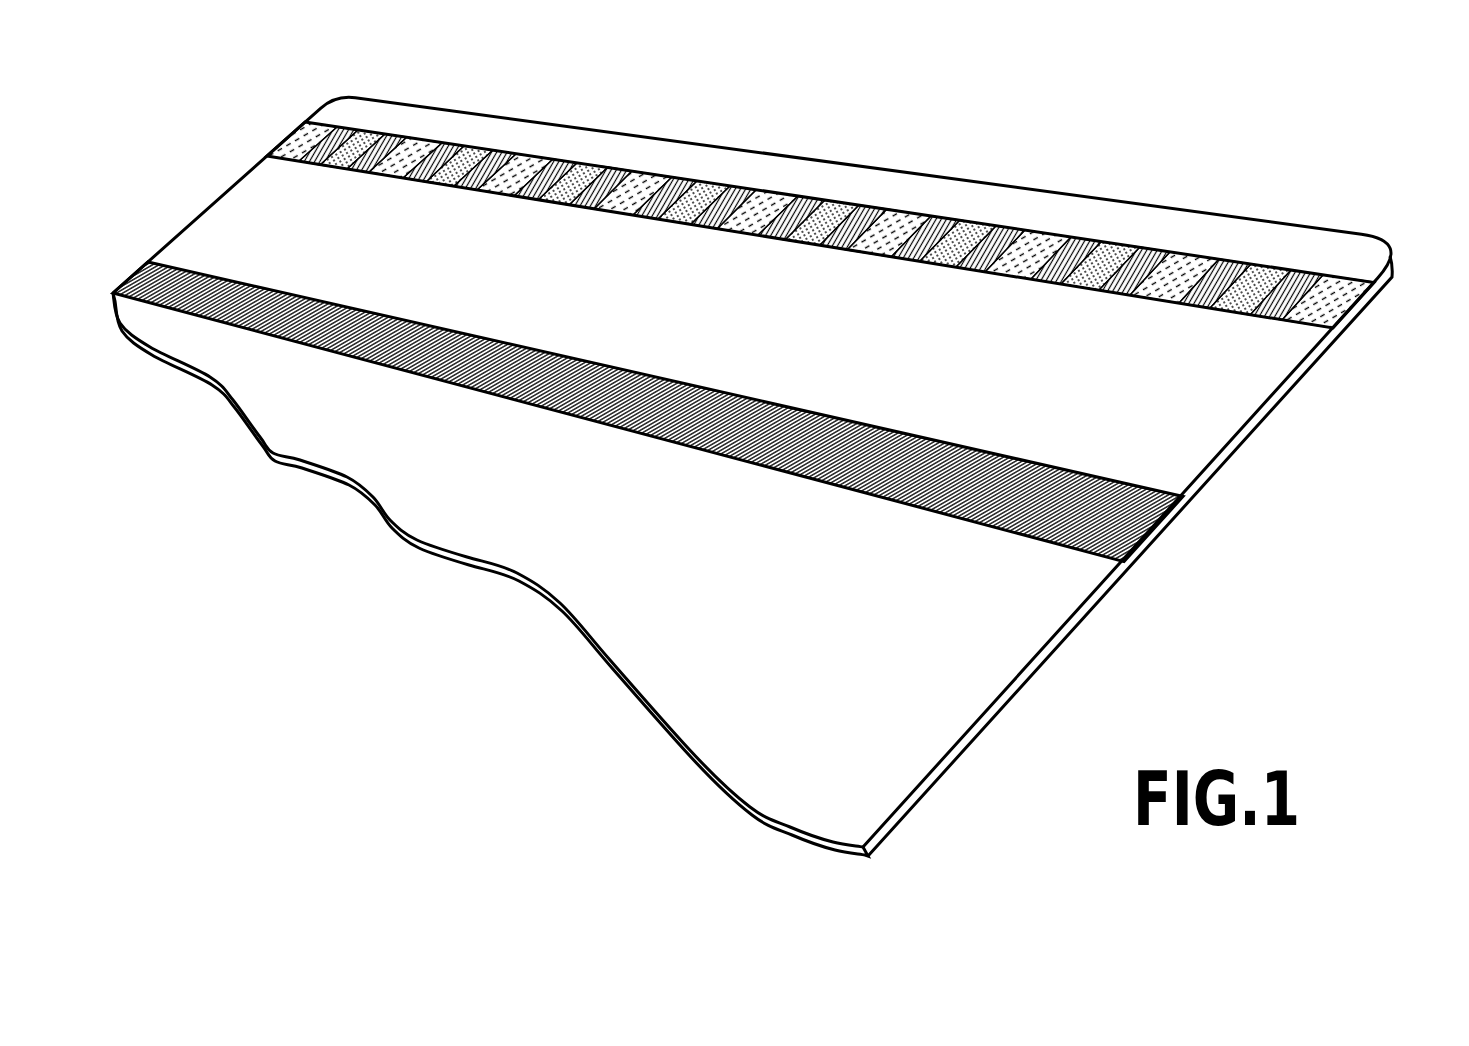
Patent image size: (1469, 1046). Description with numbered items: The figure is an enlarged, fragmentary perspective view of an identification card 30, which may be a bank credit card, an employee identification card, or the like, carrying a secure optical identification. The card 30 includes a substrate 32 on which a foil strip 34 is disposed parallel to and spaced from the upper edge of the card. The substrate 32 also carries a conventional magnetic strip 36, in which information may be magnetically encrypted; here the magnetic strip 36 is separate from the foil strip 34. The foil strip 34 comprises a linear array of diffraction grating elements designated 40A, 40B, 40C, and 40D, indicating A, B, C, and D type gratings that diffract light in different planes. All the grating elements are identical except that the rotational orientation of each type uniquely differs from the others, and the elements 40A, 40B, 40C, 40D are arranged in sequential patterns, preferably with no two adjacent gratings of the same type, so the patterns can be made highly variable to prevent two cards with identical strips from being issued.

The identification card 30 is at (512, 704).
The substrate 32 is at (888, 773).
The foil strip 34 is at (846, 191).
The magnetic strip 36 is at (1132, 527).
The A type diffraction grating element 40A is at (1300, 280).
The B type diffraction grating element 40B is at (1190, 265).
The C type diffraction grating element 40C is at (1083, 250).
The D type diffraction grating element 40D is at (990, 233).